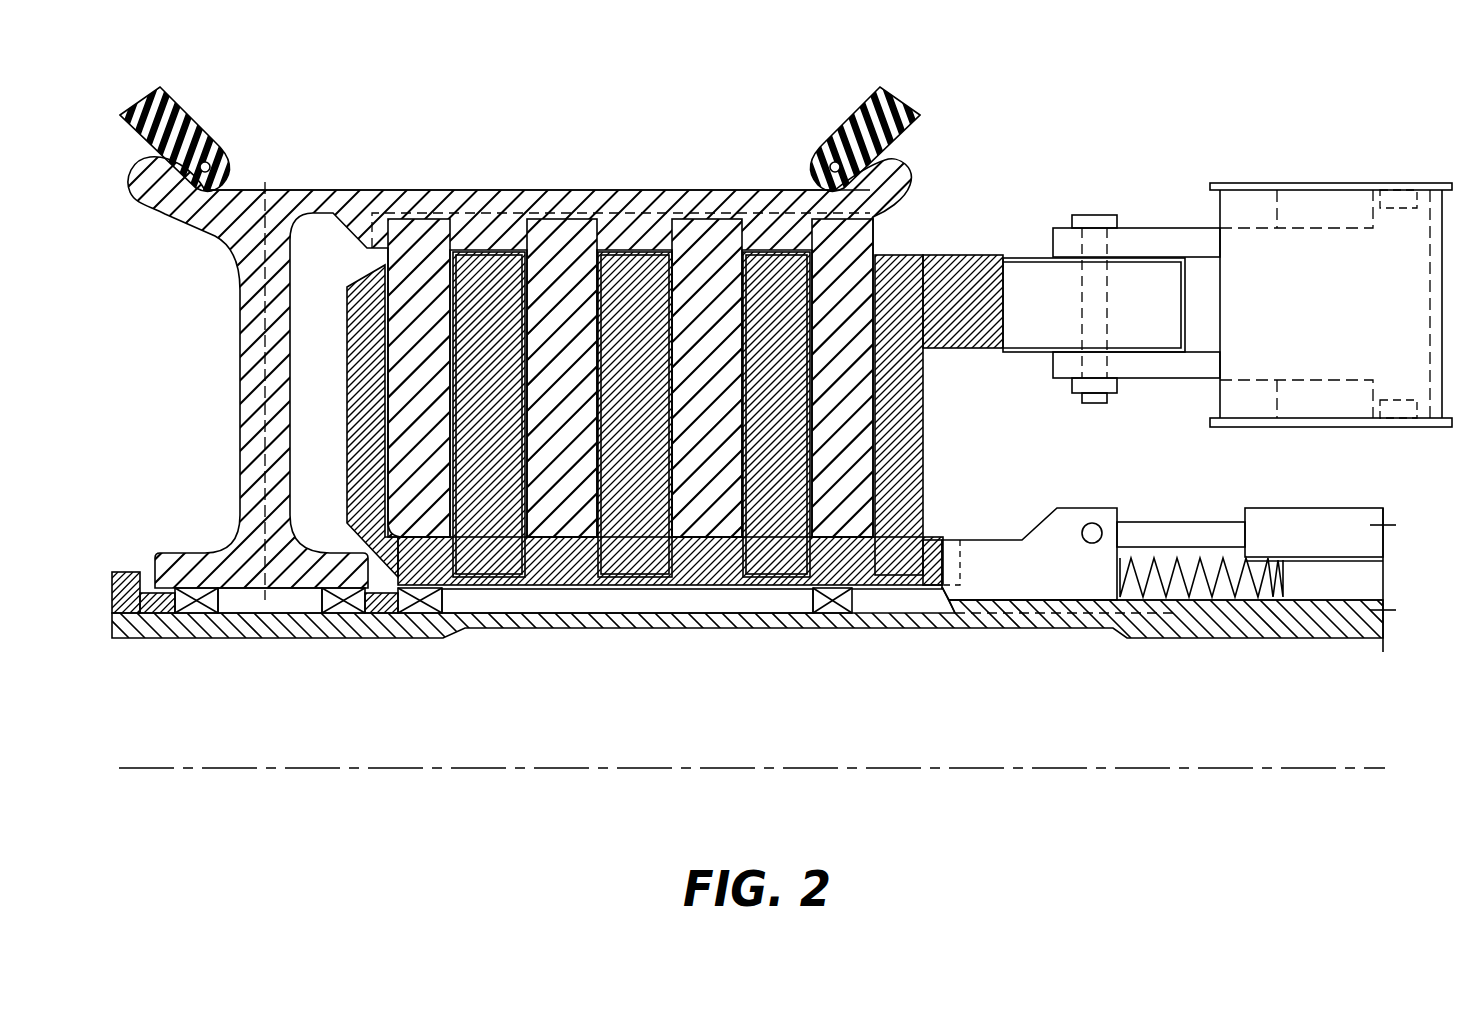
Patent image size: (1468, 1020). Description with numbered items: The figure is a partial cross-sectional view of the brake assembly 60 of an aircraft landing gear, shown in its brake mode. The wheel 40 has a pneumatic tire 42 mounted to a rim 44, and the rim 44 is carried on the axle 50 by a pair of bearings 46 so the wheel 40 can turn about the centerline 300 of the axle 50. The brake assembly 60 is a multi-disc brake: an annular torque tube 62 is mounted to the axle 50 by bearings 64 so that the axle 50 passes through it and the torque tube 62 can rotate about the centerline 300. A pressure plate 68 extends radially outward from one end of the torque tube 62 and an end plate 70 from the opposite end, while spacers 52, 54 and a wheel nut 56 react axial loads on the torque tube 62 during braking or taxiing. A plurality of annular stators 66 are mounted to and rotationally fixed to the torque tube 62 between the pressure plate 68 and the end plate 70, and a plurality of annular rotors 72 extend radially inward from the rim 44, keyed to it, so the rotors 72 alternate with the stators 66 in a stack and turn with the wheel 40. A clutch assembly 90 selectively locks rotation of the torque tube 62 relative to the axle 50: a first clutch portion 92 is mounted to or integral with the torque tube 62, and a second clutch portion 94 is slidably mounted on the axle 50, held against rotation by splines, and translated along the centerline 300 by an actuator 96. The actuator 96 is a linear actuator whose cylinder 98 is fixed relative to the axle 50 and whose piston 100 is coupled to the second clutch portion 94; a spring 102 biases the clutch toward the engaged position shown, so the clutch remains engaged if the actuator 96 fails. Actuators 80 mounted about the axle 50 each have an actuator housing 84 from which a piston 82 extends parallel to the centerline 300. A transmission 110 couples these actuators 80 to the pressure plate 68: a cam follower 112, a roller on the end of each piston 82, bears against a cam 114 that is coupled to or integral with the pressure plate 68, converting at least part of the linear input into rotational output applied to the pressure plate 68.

The wheel 40 is at (163, 218).
The pneumatic tire 42 is at (200, 125).
The rim 44 is at (290, 190).
The bearings 46 is at (203, 610).
The axle 50 is at (272, 630).
The spacer 52 is at (383, 610).
The spacer 54 is at (160, 612).
The wheel nut 56 is at (125, 573).
The brake assembly 60 is at (1187, 235).
The torque tube 62 is at (858, 575).
The bearings 64 is at (420, 610).
The stators 66 is at (490, 578).
The pressure plate 68 is at (905, 255).
The end plate 70 is at (355, 400).
The rotors 72 is at (428, 220).
The actuators 80 is at (1340, 183).
The piston 82 is at (1212, 228).
The actuator housing 84 is at (1403, 183).
The clutch assembly 90 is at (1159, 546).
The first clutch portion 92 is at (940, 540).
The second clutch portion 94 is at (1020, 540).
The actuator 96 is at (1278, 507).
The cylinder 98 is at (1338, 512).
The piston 100 is at (1187, 522).
The spring 102 is at (1212, 600).
The transmission 110 is at (1065, 215).
The cam follower 112 is at (1033, 258).
The cam 114 is at (960, 255).
The centerline 300 is at (157, 768).